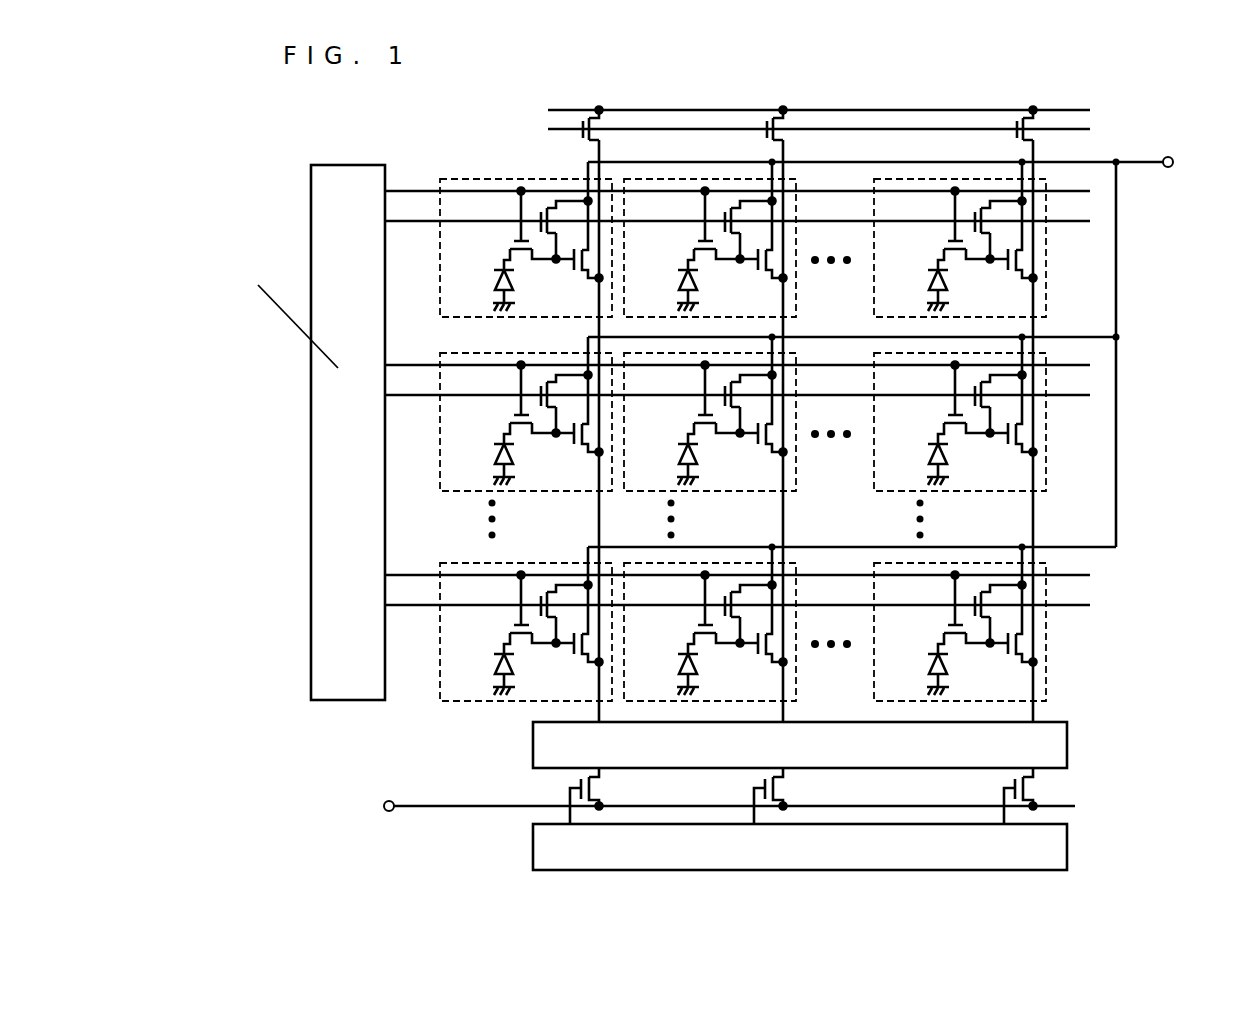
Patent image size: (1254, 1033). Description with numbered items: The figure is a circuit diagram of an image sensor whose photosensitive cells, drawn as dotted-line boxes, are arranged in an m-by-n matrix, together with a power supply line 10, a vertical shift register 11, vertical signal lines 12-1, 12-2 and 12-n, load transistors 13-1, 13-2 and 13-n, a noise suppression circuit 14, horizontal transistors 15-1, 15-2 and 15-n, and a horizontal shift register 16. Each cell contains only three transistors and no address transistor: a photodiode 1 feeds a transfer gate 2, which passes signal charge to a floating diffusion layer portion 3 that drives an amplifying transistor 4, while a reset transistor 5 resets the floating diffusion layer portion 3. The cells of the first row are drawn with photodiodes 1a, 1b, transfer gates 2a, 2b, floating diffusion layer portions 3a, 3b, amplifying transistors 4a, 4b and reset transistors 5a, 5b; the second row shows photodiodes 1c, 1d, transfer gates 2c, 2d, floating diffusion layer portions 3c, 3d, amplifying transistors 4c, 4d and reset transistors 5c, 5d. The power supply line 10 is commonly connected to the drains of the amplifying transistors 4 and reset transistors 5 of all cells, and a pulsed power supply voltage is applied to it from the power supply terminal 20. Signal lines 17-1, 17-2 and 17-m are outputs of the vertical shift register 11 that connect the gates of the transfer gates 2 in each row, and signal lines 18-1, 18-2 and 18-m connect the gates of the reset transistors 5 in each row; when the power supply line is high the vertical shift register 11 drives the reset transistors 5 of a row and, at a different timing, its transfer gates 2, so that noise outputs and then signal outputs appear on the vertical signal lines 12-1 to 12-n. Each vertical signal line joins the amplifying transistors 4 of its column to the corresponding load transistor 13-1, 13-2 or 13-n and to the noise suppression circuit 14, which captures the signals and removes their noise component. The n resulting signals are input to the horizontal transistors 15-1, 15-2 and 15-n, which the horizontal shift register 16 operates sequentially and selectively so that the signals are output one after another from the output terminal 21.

The photodiode 1 is at (702, 480).
The photodiode 1a is at (480, 287).
The photodiode 1b is at (664, 287).
The photodiode 1c is at (481, 461).
The photodiode 1d is at (664, 461).
The transfer gate 2 is at (731, 421).
The transfer gate 2a is at (508, 229).
The transfer gate 2b is at (692, 229).
The transfer gate 2c is at (508, 403).
The transfer gate 2d is at (692, 403).
The floating diffusion layer portion 3 is at (772, 462).
The floating diffusion layer portion 3a is at (552, 271).
The floating diffusion layer portion 3b is at (736, 271).
The floating diffusion layer portion 3c is at (552, 445).
The floating diffusion layer portion 3d is at (736, 445).
The amplifying transistor 4 is at (804, 448).
The amplifying transistor 4a is at (582, 255).
The amplifying transistor 4b is at (766, 255).
The amplifying transistor 4c is at (583, 429).
The amplifying transistor 4d is at (766, 429).
The reset transistor 5 is at (760, 407).
The reset transistor 5a is at (538, 214).
The reset transistor 5b is at (722, 214).
The reset transistor 5c is at (539, 388).
The reset transistor 5d is at (722, 388).
The power supply line 10 is at (1141, 170).
The vertical shift register 11 is at (349, 163).
The vertical signal line 12-1 is at (598, 513).
The vertical signal line 12-2 is at (782, 513).
The vertical signal line 12-n is at (1032, 513).
The load transistor 13-1 is at (622, 132).
The load transistor 13-2 is at (806, 132).
The load transistor 13-n is at (1056, 132).
The noise suppression circuit 14 is at (533, 745).
The horizontal transistor 15-1 is at (615, 796).
The horizontal transistor 15-2 is at (799, 796).
The horizontal transistor 15-n is at (1049, 796).
The horizontal shift register 16 is at (533, 853).
The signal line 17-1 is at (410, 190).
The signal line 17-2 is at (410, 364).
The signal line 17-m is at (410, 574).
The signal line 18-1 is at (412, 224).
The signal line 18-2 is at (412, 398).
The signal line 18-m is at (412, 608).
The power supply terminal 20 is at (1165, 156).
The output terminal 21 is at (389, 801).